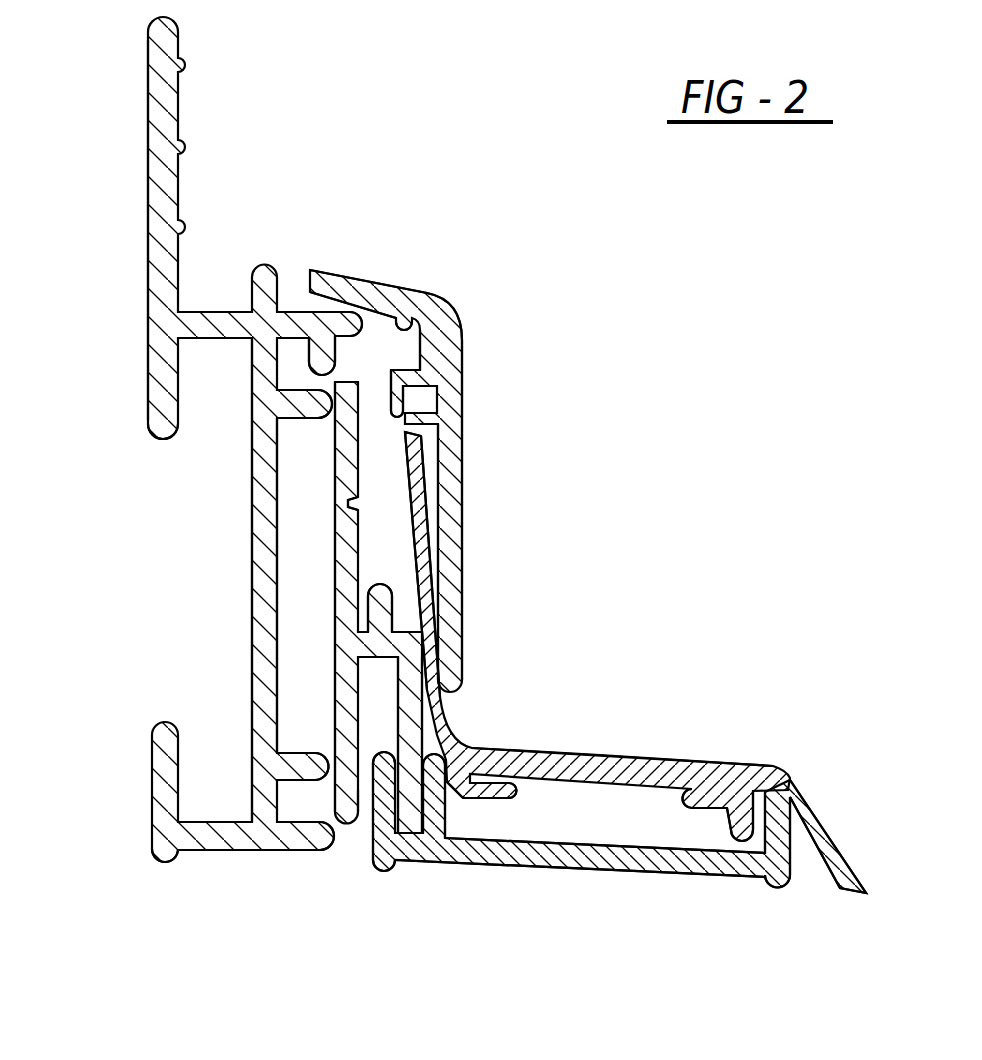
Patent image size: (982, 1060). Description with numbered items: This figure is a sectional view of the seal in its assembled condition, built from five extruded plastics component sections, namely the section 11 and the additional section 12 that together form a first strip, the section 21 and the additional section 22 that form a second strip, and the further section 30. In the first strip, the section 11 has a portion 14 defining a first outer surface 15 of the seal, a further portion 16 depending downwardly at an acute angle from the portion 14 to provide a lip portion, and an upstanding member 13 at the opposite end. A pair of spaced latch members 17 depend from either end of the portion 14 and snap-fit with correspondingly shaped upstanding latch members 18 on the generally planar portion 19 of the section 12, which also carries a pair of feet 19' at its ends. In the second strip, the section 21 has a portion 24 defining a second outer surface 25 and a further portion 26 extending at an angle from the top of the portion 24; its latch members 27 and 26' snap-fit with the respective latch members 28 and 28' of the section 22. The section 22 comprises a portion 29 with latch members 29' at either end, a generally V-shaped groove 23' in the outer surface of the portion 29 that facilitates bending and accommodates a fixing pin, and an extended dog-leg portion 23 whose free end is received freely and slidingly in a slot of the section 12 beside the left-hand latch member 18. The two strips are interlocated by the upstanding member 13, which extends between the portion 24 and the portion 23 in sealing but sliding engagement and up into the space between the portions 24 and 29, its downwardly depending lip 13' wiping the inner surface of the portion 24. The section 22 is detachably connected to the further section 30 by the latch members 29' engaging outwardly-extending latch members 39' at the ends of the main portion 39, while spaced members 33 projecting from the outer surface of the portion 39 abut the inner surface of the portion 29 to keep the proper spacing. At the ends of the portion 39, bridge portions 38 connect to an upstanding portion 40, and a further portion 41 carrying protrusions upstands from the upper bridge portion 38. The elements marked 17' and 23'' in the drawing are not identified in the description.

The section 11 is at (672, 742).
The additional section 12 is at (570, 872).
The upstanding member 13 is at (476, 564).
The downwardly depending lip 13' is at (491, 398).
The portion 14 is at (625, 766).
The first outer surface 15 is at (560, 760).
The further portion 16 is at (835, 838).
The latch members 17 is at (598, 865).
The retaining tongue 17' is at (595, 857).
The upstanding latch members 18 is at (452, 772).
The generally planar portion 19 is at (580, 908).
The feet 19' is at (582, 868).
The section 21 is at (478, 450).
The additional section 22 is at (330, 601).
The extended dog-leg portion 23 is at (404, 800).
The generally V-shaped groove 23' is at (342, 463).
The locking tongue 23'' is at (461, 604).
The portion 24 is at (448, 485).
The second outer surface 25 is at (463, 520).
The further portion 26 is at (368, 231).
The latch member 26' is at (440, 259).
The latch member 27 is at (430, 398).
The latch member 28 is at (496, 324).
The latch member 28' is at (479, 284).
The portion 29 is at (264, 597).
The latch members 29' is at (273, 507).
The further section 30 is at (128, 333).
The spaced members 33 is at (300, 405).
The bridge portions 38 is at (222, 325).
The main portion 39 is at (215, 580).
The outwardly-extending latch members 39' is at (329, 571).
The upstanding portion 40 is at (160, 400).
The upstanding portion 41 is at (160, 175).